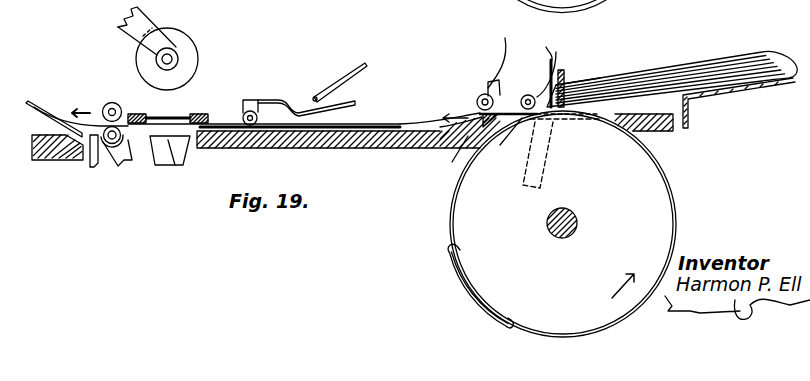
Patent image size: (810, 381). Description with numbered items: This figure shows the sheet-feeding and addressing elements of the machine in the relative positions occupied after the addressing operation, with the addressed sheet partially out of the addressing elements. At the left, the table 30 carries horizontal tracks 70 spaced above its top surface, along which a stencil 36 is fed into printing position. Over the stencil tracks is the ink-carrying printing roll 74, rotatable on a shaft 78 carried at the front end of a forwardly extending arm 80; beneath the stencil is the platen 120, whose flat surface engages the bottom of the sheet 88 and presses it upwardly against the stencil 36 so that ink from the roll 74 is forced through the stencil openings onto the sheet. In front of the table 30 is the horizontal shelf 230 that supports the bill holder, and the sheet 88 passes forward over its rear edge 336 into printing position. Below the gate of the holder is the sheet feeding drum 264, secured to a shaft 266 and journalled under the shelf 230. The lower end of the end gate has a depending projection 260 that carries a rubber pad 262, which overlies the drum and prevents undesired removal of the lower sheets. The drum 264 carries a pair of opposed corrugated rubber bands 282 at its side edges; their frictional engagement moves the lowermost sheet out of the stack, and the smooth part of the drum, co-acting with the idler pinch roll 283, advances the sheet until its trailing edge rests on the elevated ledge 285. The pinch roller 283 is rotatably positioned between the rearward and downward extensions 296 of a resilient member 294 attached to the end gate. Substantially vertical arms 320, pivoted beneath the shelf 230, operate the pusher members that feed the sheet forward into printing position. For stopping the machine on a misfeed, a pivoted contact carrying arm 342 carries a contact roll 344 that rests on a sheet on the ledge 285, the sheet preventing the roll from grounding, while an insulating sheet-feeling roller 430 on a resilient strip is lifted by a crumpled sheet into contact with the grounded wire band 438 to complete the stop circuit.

The table 30 is at (258, 137).
The stencil 36 is at (168, 112).
The tracks 70 is at (132, 112).
The printing roll 74 is at (189, 38).
The shaft 78 is at (173, 57).
The arm 80 is at (124, 22).
The sheet 88 is at (421, 120).
The platen 120 is at (166, 148).
The shelf 230 is at (665, 127).
The depending projection 260 is at (568, 86).
The rubber pad 262 is at (564, 75).
The sheet feeding drum 264 is at (674, 213).
The shaft 266 is at (578, 216).
The corrugated rubber bands 282 is at (452, 255).
The idler pinch roll 283 is at (526, 94).
The elevated ledge 285 is at (441, 162).
The resilient member 294 is at (558, 70).
The rearward and downward extensions 296 is at (504, 145).
The vertical arms 320 is at (548, 160).
The rear edge 336 is at (481, 112).
The contact carrying arm 342 is at (486, 61).
The contact roll 344 is at (479, 95).
The sheet-feeling roller 430 is at (262, 100).
The wire band 438 is at (340, 76).